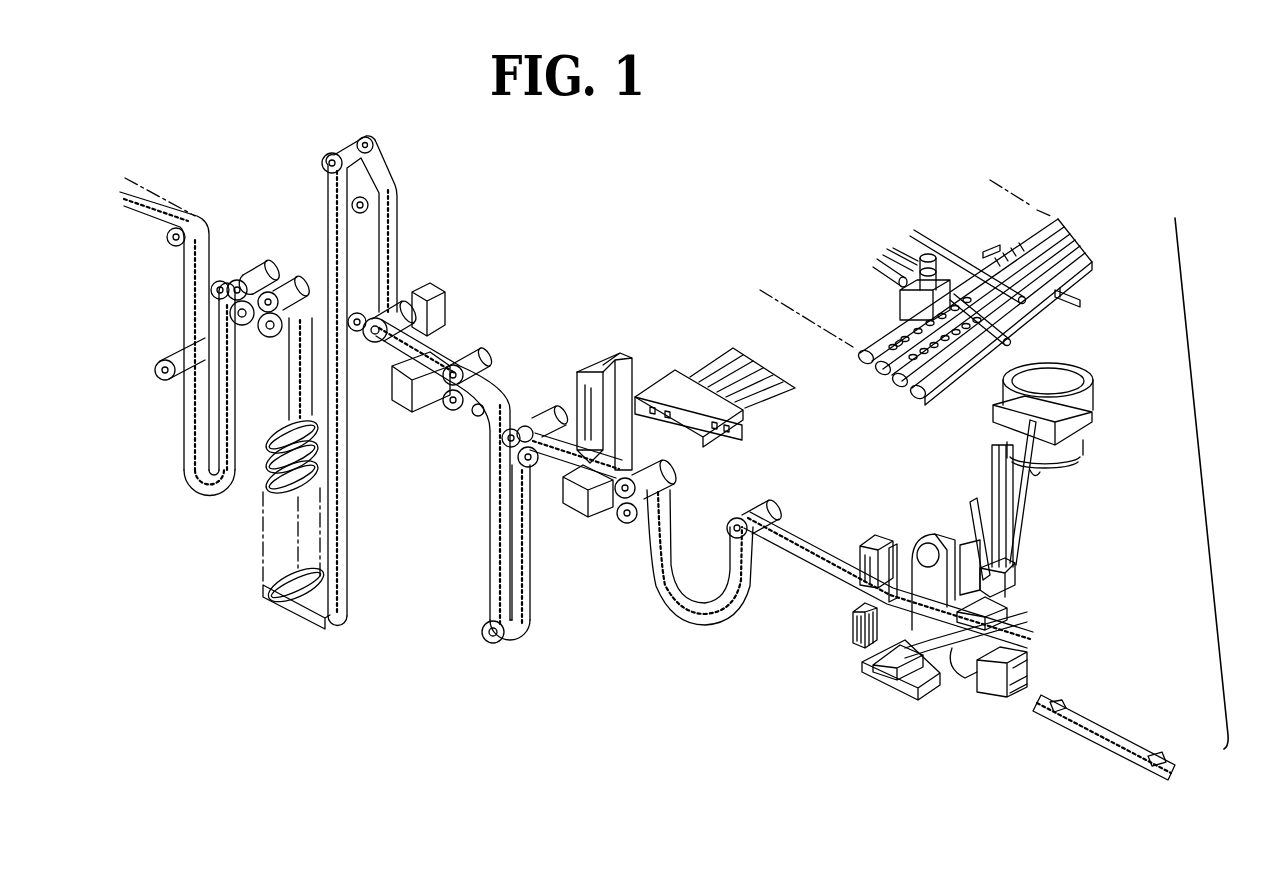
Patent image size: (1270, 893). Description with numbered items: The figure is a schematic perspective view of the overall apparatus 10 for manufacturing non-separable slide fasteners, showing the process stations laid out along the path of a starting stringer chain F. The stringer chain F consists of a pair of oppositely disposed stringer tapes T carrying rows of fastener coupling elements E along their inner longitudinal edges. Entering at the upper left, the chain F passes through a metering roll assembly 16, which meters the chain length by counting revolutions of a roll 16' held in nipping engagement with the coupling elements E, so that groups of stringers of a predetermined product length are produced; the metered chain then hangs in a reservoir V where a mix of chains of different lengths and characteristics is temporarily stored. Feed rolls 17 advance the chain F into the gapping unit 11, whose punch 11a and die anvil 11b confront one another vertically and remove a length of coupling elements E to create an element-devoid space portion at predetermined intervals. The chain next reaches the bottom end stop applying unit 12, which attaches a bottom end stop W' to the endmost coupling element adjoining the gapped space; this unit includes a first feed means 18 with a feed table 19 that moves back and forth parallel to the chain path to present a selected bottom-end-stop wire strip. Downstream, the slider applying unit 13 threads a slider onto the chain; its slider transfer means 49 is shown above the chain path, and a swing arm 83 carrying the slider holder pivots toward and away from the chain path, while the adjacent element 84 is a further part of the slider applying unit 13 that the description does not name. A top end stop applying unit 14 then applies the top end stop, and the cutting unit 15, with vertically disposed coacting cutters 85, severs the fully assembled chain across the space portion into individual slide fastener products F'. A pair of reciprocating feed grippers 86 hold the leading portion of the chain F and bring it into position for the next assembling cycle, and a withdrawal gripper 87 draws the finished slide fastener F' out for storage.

The apparatus 10 is at (727, 226).
The stringer chain F is at (184, 320).
The metering roll assembly 16 is at (246, 263).
The roll 16' is at (289, 284).
The reservoir V is at (258, 553).
The fastener coupling elements E is at (348, 537).
The stringer tapes T is at (392, 232).
The feed rolls 17 is at (380, 343).
The gapping unit 11 is at (452, 303).
The punch 11a is at (428, 284).
The die anvil 11b is at (416, 413).
The bottom end stop applying unit 12 is at (592, 350).
The first feed means 18 is at (660, 367).
The feed table 19 is at (720, 428).
The slider transfer means 49 is at (888, 297).
The cutting unit 15 is at (863, 540).
The cutters 85 is at (895, 555).
The swing arm 83 is at (943, 527).
The slider chute 84 is at (970, 507).
The top end stop applying unit 14 is at (1022, 577).
The slider applying unit 13 is at (1022, 592).
The feed grippers 86 is at (1008, 615).
The withdrawal gripper 87 is at (985, 690).
The bottom end stop W' is at (1108, 708).
The slide fastener product F' is at (1104, 722).